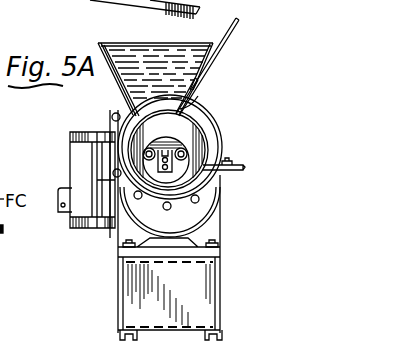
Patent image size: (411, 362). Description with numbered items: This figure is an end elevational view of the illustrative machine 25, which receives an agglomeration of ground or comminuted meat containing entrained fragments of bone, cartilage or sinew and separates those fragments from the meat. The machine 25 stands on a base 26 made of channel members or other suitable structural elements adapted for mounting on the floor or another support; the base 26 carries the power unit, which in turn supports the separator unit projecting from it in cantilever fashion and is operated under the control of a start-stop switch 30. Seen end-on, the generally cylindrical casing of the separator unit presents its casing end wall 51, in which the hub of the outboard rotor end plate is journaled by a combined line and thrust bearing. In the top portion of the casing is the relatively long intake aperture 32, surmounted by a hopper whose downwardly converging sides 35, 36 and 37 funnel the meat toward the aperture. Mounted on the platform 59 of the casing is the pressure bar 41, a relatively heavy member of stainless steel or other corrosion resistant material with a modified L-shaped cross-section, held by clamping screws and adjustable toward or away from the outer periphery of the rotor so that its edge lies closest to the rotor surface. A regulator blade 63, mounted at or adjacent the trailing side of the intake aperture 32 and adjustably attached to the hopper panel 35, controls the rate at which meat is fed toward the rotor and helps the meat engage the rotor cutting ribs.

The machine 25 is at (237, 85).
The base 26 is at (222, 308).
The start-stop switch 30 is at (80, 168).
The intake aperture 32 is at (165, 103).
The hopper side 35 is at (237, 21).
The hopper side 36 is at (145, 51).
The hopper side 37 is at (112, 80).
The pressure bar 41 is at (213, 143).
The casing end wall 51 is at (205, 110).
The platform 59 is at (243, 164).
The regulator blade 63 is at (198, 96).